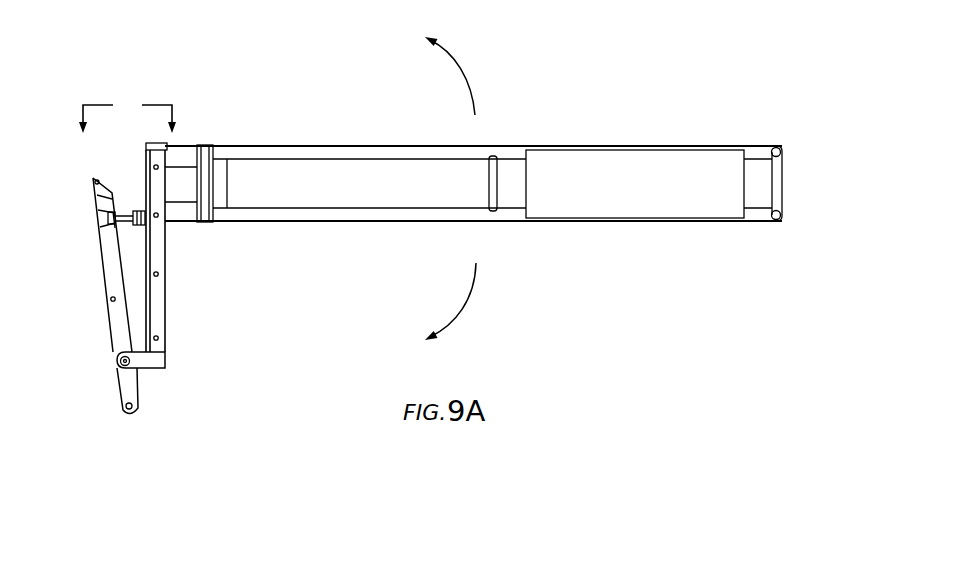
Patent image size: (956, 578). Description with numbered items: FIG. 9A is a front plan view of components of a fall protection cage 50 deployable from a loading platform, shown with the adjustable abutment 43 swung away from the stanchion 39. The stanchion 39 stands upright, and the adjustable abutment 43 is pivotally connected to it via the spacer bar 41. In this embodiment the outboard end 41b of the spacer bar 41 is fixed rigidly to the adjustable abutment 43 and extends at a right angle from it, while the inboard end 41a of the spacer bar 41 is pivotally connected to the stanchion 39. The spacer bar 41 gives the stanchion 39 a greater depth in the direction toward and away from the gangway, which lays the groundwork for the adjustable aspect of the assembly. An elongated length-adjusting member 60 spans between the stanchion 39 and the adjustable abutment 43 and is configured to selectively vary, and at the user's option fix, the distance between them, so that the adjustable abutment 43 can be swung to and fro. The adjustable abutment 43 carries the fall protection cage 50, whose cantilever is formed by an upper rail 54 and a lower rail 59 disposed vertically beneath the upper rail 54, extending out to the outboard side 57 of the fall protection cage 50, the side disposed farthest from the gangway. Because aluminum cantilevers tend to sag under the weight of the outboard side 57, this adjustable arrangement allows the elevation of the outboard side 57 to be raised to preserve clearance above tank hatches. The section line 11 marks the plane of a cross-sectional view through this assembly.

The section line 11- 11 is at (131, 119).
The stanchion 39 is at (112, 312).
The spacer bar 41 is at (142, 364).
The inboard end of the spacer bar 41a is at (117, 353).
The outboard end of the spacer bar 41b is at (162, 363).
The adjustable abutment 43 is at (160, 305).
The fall protection cage 50 is at (523, 122).
The upper rail 54 is at (341, 148).
The outboard side of the fall protection cage 57 is at (781, 178).
The lower rail 59 is at (328, 216).
The elongated length-adjusting member 60 is at (125, 200).